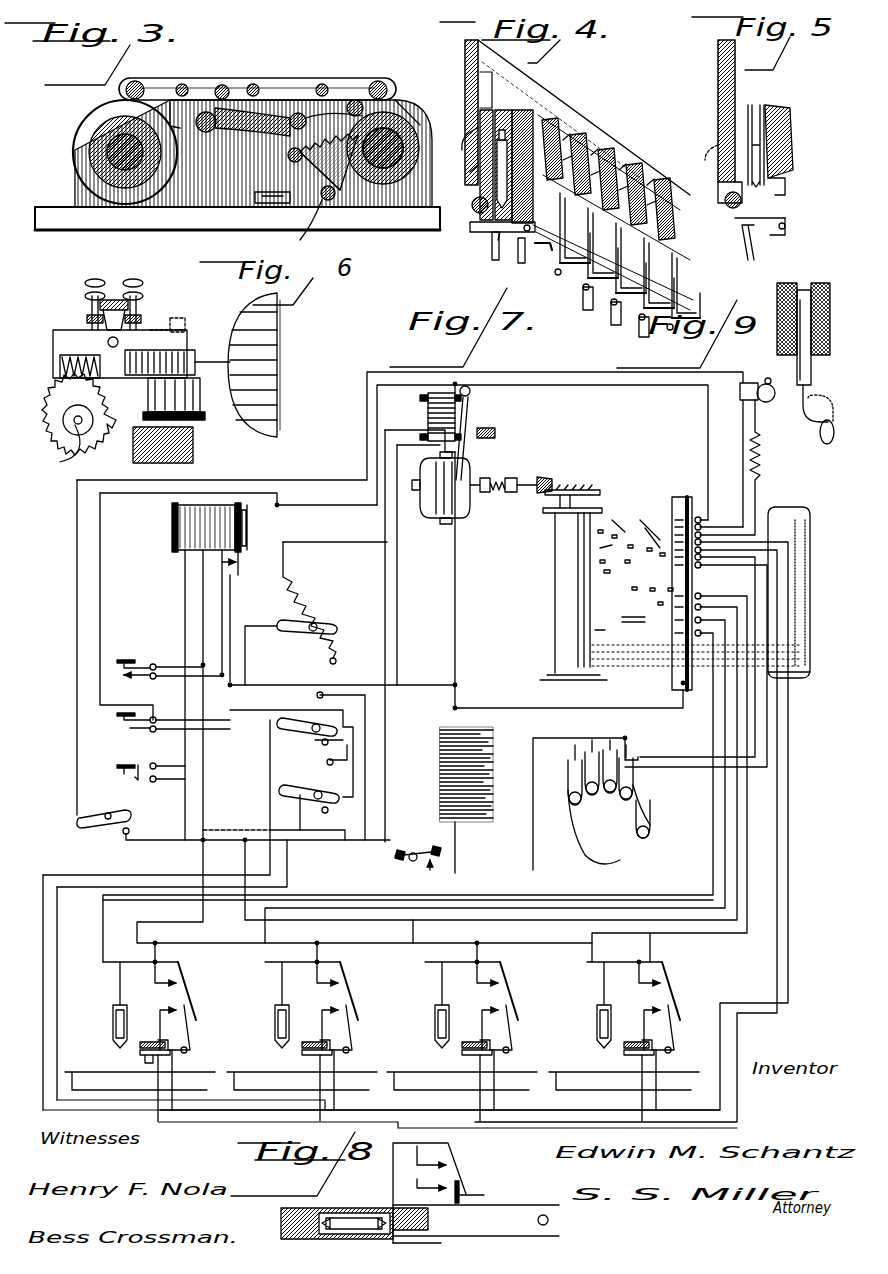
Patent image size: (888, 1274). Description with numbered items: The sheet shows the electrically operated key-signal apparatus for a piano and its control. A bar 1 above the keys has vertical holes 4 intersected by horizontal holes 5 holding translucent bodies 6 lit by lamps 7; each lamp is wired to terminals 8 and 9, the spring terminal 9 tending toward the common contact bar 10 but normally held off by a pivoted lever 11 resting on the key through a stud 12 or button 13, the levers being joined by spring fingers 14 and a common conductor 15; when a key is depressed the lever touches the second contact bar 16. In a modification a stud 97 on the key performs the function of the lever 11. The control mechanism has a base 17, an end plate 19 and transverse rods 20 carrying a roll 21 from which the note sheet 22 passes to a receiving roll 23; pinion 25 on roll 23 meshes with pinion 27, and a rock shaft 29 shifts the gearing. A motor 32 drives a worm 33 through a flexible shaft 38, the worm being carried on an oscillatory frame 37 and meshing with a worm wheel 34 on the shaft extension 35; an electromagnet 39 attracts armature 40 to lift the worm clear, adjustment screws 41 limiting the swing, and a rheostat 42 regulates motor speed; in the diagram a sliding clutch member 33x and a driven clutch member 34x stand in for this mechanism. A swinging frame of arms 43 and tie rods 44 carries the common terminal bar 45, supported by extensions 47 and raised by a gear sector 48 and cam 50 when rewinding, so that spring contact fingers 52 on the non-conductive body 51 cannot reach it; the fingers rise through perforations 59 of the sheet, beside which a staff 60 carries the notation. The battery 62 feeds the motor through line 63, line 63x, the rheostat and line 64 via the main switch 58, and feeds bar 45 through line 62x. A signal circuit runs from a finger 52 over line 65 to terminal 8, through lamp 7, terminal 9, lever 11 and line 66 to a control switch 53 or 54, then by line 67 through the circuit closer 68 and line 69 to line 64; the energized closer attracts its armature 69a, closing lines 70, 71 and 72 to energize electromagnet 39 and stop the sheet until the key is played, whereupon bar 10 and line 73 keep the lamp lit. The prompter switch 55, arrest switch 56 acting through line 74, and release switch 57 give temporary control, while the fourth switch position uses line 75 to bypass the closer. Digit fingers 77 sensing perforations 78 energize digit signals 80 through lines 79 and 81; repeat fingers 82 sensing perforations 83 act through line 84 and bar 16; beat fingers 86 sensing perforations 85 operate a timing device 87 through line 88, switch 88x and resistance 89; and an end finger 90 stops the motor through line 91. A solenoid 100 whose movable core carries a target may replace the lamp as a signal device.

In FIG. 4, the bar 1 is at (460, 102).
In FIG. 5, the bar 1 is at (717, 121).
In FIG. 4, the vertical holes 4 is at (459, 132).
In FIG. 5, the vertical holes 4 is at (702, 146).
In FIG. 4, the horizontal holes 5 is at (476, 232).
In FIG. 4, the translucent bodies 6 is at (472, 203).
In FIG. 4, the electric lamps 7 is at (459, 167).
In FIG. 5, the electric lamps 7 is at (716, 170).
In FIG. 7, the electric lamps 7 is at (275, 1025).
In FIG. 8, the electric lamps 7 is at (335, 1216).
In FIG. 4, the terminal 8 is at (496, 108).
In FIG. 5, the terminal 8 is at (756, 131).
In FIG. 7, the terminal 8 is at (280, 1003).
In FIG. 4, the spring terminal 9 is at (592, 118).
In FIG. 5, the spring terminal 9 is at (800, 135).
In FIG. 7, the spring terminal 9 is at (345, 980).
In FIG. 8, the spring terminal 9 is at (462, 1150).
In FIG. 4, the contact bar 10 is at (670, 215).
In FIG. 5, the contact bar 10 is at (796, 160).
In FIG. 7, the contact bar 10 is at (471, 995).
In FIG. 8, the contact bar 10 is at (431, 1154).
In FIG. 4, the metallic levers 11 is at (688, 276).
In FIG. 5, the metallic levers 11 is at (795, 212).
In FIG. 7, the metallic levers 11 is at (360, 1032).
In FIG. 4, the extended studs 12 is at (491, 254).
In FIG. 5, the extended studs 12 is at (769, 242).
In FIG. 7, the extended studs 12 is at (429, 1055).
In FIG. 4, the knobs or buttons 13 is at (612, 302).
In FIG. 7, the knobs or buttons 13 is at (593, 1061).
In FIG. 4, the spring fingers 14 is at (680, 232).
In FIG. 5, the spring fingers 14 is at (735, 222).
In FIG. 7, the spring fingers 14 is at (365, 1066).
In FIG. 4, the common conductor 15 is at (540, 278).
In FIG. 5, the common conductor 15 is at (798, 228).
In FIG. 7, the common conductor 15 is at (422, 1037).
In FIG. 4, the second contact bar 16 is at (676, 252).
In FIG. 5, the second contact bar 16 is at (802, 182).
In FIG. 7, the second contact bar 16 is at (463, 1025).
In FIG. 8, the second contact bar 16 is at (425, 1177).
In FIG. 3, the base 17 is at (172, 222).
In FIG. 3, the end plate 19 is at (336, 118).
In FIG. 3, the transverse rods 20 is at (165, 88).
In FIG. 3, the roll 21 is at (415, 110).
In FIG. 7, the roll 21 is at (810, 560).
In FIG. 3, the note sheet 22 is at (282, 100).
In FIG. 7, the note sheet 22 is at (647, 485).
In FIG. 3, the receiving roll 23 is at (72, 155).
In FIG. 7, the receiving roll 23 is at (555, 548).
In FIG. 7, the bevel gear pinion 25 is at (580, 488).
In FIG. 7, the gear pinion 27 is at (577, 451).
In FIG. 3, the rock shaft 29 is at (296, 227).
In FIG. 6, the electric motor 32 is at (258, 300).
In FIG. 7, the electric motor 32 is at (430, 518).
In FIG. 6, the worm 33 is at (60, 364).
In FIG. 7, the clutch member 33x is at (485, 492).
In FIG. 6, the worm wheel 34 is at (50, 406).
In FIG. 7, the driven clutch member 34x is at (512, 492).
In FIG. 6, the shaft extension 35 is at (57, 452).
In FIG. 6, the oscillatory frame 37 is at (72, 322).
In FIG. 6, the flexible shaft 38 is at (190, 345).
In FIG. 6, the electromagnet 39 is at (200, 420).
In FIG. 7, the electromagnet 39 is at (466, 385).
In FIG. 6, the armature 40 is at (176, 325).
In FIG. 7, the armature 40 is at (472, 432).
In FIG. 6, the adjustment screws 41 is at (128, 282).
In FIG. 7, the rheostat 42 is at (330, 600).
In FIG. 3, the arms 43 is at (258, 84).
In FIG. 3, the tie rods 44 is at (326, 82).
In FIG. 3, the common terminal bar 45 is at (190, 88).
In FIG. 7, the common terminal bar 45 is at (680, 495).
In FIG. 3, the frame extension 47 is at (380, 95).
In FIG. 3, the gear sector 48 is at (329, 167).
In FIG. 3, the cam extension 50 is at (398, 100).
In FIG. 4, the cam extension 50 is at (480, 80).
In FIG. 3, the non-conductive body 51 is at (268, 140).
In FIG. 3, the spring contact fingers 52 is at (235, 82).
In FIG. 7, the spring contact fingers 52 is at (696, 653).
In FIG. 7, the control switch 53 is at (307, 733).
In FIG. 7, the control switch 54 is at (309, 795).
In FIG. 7, the prompter switch 55 is at (169, 658).
In FIG. 7, the arrest switch 56 is at (173, 710).
In FIG. 7, the release switch 57 is at (147, 762).
In FIG. 7, the main switch 58 is at (419, 847).
In FIG. 7, the perforations 59 is at (620, 629).
In FIG. 7, the staff 60 is at (640, 676).
In FIG. 7, the battery 62 is at (505, 760).
In FIG. 7, the line 62x is at (570, 694).
In FIG. 7, the line 63 is at (458, 588).
In FIG. 7, the line 63x is at (348, 528).
In FIG. 7, the line 64 is at (348, 840).
In FIG. 7, the line 65 is at (720, 730).
In FIG. 7, the line 66 is at (45, 1000).
In FIG. 7, the line 67 is at (205, 770).
In FIG. 7, the circuit closer 68 is at (173, 528).
In FIG. 7, the line 69 is at (185, 605).
In FIG. 7, the armature 69a is at (250, 613).
In FIG. 7, the line 70 is at (238, 496).
In FIG. 7, the line 71 is at (397, 605).
In FIG. 7, the line 72 is at (245, 600).
In FIG. 7, the line 73 is at (212, 948).
In FIG. 7, the line 74 is at (103, 582).
In FIG. 7, the line 75 is at (308, 766).
In FIG. 7, the spring contact fingers 77 is at (690, 562).
In FIG. 7, the perforations 78 is at (609, 575).
In FIG. 7, the line 79 is at (778, 712).
In FIG. 7, the digit signal 80 is at (635, 790).
In FIG. 9, the line 81 is at (826, 445).
In FIG. 7, the line 81 is at (530, 838).
In FIG. 7, the contact fingers 82 is at (705, 545).
In FIG. 7, the perforation 83 is at (634, 567).
In FIG. 7, the line 84 is at (789, 820).
In FIG. 7, the perforations 85 is at (612, 523).
In FIG. 7, the spring fingers 86 is at (652, 523).
In FIG. 7, the timing device 87 is at (740, 390).
In FIG. 7, the line 88 is at (62, 652).
In FIG. 7, the switch 88x is at (230, 831).
In FIG. 7, the resistance 89 is at (762, 456).
In FIG. 7, the spring finger 90 is at (689, 581).
In FIG. 7, the line 91 is at (542, 452).
In FIG. 8, the stud 97 is at (482, 1188).
In FIG. 9, the electromagnet 100 is at (778, 330).